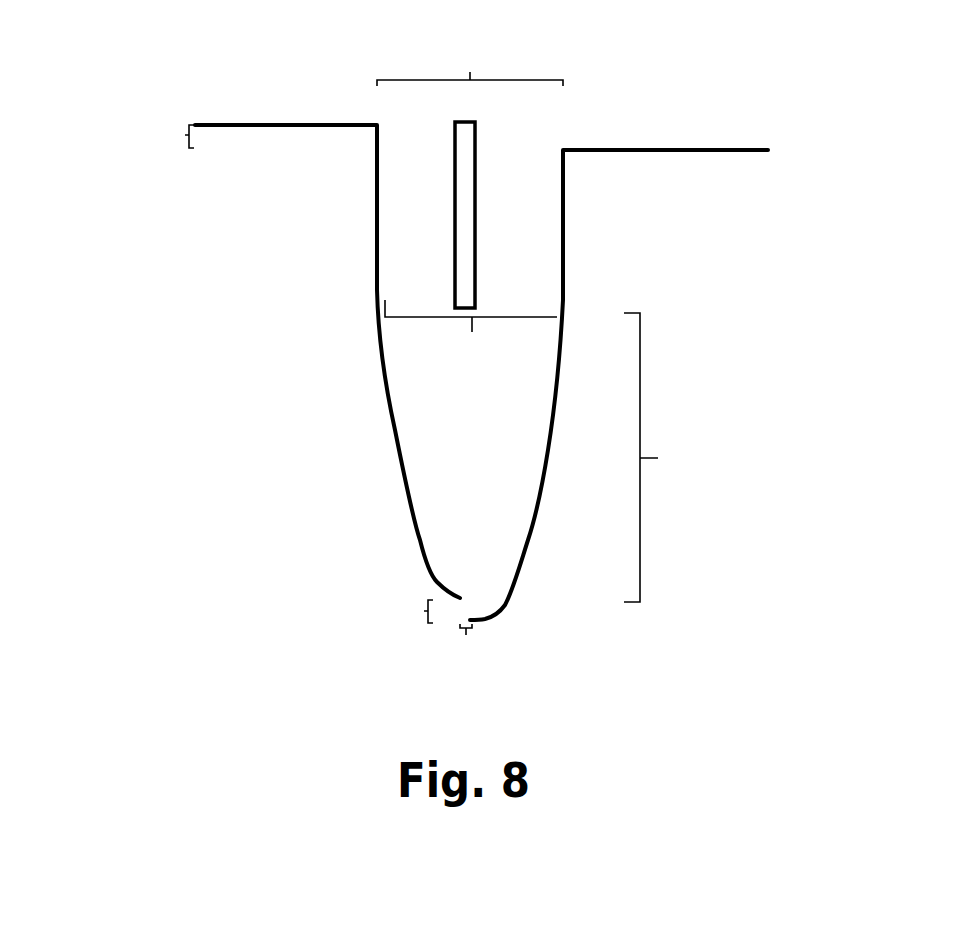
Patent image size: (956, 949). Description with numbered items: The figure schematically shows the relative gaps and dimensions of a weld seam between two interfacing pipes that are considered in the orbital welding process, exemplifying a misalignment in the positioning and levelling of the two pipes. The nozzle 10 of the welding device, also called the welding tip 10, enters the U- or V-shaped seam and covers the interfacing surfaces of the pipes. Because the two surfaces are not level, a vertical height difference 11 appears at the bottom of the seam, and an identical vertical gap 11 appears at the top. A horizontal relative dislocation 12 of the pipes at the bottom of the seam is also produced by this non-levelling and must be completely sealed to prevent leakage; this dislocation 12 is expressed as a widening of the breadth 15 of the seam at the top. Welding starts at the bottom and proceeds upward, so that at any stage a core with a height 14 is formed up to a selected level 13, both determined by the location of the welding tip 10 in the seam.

The nozzle 10 is at (498, 160).
The vertical height difference 11 is at (167, 133).
The horizontal relative dislocation 12 is at (453, 658).
The selected level 13 is at (361, 311).
The core height 14 is at (684, 421).
The breadth of the seam 15 is at (363, 68).